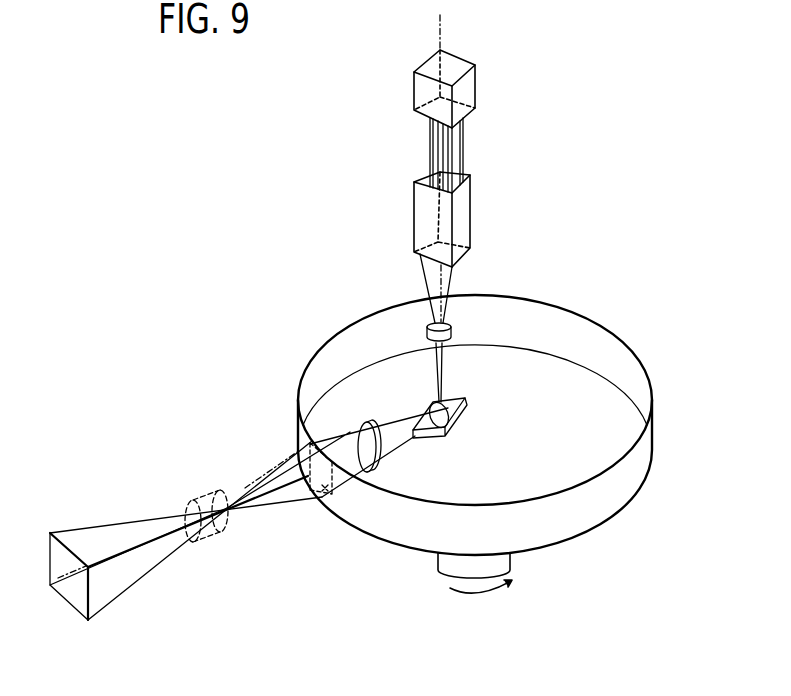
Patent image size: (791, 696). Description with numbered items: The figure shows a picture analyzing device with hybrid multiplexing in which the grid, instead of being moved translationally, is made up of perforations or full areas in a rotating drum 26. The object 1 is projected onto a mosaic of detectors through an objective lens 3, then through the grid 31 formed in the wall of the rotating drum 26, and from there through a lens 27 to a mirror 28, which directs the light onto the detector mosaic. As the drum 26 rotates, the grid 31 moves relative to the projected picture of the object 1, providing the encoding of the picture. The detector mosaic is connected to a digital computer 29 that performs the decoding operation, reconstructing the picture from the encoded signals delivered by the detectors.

The object 1 is at (75, 594).
The objective lens 3 is at (217, 530).
The grid 31 is at (322, 497).
The lens 27 is at (366, 423).
The mirror 28 is at (450, 431).
The rotating drum 26 is at (567, 527).
The digital computer 29 is at (467, 89).